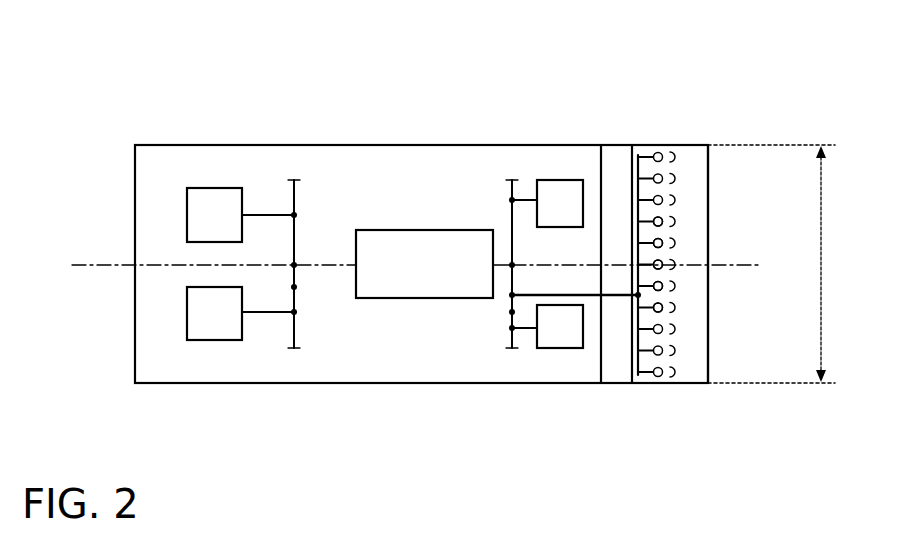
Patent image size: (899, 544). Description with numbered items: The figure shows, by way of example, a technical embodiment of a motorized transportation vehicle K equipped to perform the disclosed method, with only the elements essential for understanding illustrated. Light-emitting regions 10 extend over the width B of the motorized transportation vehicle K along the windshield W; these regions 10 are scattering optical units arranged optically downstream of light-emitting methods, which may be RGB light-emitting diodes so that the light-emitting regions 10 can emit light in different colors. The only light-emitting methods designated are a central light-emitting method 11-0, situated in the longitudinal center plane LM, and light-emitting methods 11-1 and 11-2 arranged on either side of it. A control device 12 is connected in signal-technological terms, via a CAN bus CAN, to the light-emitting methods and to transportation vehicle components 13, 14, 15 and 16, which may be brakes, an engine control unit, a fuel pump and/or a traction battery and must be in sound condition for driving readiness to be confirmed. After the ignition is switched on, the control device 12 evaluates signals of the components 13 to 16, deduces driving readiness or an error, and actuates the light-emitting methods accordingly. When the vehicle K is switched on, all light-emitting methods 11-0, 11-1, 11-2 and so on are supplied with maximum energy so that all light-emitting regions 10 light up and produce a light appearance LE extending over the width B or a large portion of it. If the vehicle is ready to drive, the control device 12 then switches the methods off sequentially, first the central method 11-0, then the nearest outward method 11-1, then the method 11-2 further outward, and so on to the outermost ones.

The light-emitting regions 10 is at (675, 199).
The central light-emitting method 11-0 is at (662, 266).
The light-emitting method 11-1 is at (660, 242).
The light-emitting method 11-2 is at (657, 220).
The control device 12 is at (433, 230).
The transportation vehicle component 13 is at (211, 188).
The transportation vehicle component 14 is at (213, 340).
The transportation vehicle component 15 is at (549, 180).
The transportation vehicle component 16 is at (558, 348).
The longitudinal center plane LM is at (93, 264).
The CAN bus CAN is at (512, 312).
The windshield W is at (623, 350).
The motorized transportation vehicle K is at (668, 102).
The light appearance LE is at (693, 237).
The width B is at (822, 264).